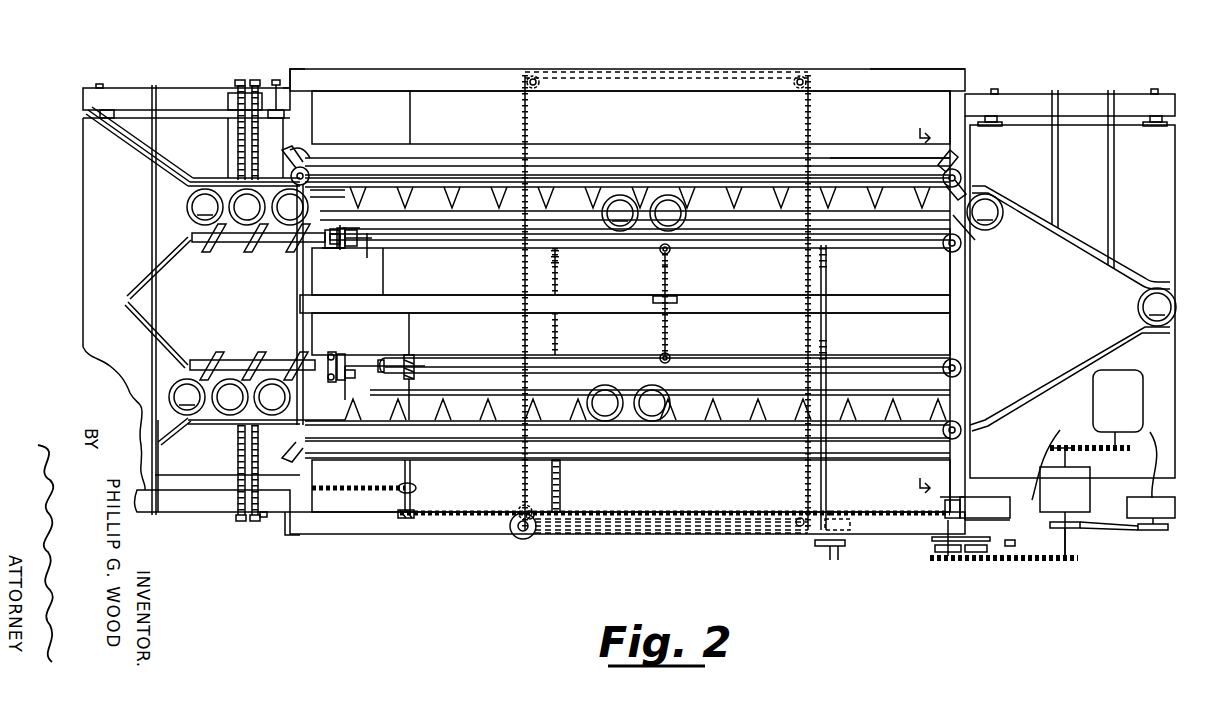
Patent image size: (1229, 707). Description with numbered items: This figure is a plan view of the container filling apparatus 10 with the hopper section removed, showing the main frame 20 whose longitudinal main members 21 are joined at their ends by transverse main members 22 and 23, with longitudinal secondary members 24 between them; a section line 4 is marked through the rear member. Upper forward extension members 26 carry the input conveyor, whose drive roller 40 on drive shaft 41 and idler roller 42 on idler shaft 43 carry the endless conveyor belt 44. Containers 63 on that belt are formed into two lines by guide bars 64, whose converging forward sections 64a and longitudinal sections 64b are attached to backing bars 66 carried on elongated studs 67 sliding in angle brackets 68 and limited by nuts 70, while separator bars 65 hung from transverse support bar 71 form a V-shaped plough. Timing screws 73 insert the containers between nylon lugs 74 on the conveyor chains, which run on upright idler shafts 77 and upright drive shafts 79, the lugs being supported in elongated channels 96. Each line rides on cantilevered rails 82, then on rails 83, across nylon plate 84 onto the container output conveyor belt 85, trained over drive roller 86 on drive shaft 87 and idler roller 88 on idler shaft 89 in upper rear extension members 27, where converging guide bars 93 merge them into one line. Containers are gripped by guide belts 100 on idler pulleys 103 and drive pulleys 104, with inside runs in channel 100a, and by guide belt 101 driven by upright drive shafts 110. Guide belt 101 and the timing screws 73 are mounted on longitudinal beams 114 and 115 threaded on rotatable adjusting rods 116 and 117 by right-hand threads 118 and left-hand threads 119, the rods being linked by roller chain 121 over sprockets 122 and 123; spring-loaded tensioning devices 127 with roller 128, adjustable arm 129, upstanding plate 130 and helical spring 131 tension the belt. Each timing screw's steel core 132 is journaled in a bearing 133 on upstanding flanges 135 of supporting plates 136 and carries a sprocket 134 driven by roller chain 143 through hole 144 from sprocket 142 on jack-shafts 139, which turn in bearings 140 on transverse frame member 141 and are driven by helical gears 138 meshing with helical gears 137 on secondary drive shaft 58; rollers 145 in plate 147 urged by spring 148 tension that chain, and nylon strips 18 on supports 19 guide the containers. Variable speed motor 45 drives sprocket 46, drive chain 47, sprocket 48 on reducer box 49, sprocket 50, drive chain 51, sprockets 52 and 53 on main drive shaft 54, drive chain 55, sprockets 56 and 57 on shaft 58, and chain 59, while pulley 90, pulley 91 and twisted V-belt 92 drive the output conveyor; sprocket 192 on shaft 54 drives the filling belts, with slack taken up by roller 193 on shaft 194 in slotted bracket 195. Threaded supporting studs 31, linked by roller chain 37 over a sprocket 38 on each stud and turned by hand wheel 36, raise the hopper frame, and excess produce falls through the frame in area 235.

The section line 4 is at (933, 308).
The container filling apparatus 10 is at (898, 69).
The nylon strips 18 is at (342, 230).
The supports 19 is at (365, 250).
The main frame 20 is at (290, 69).
The longitudinal main members 21 is at (487, 69).
The transverse main member 22 is at (296, 312).
The transverse main member 23 is at (958, 333).
The longitudinal secondary members 24 is at (432, 172).
The upper forward extension members 26 is at (140, 88).
The upper rear extension members 27 is at (1080, 94).
The threaded supporting studs 31 is at (536, 79).
The hand wheel 36 is at (524, 540).
The roller chain 37 is at (803, 492).
The sprocket 38 is at (540, 76).
The drive roller 40 is at (275, 110).
The drive shaft 41 is at (263, 518).
The idler roller 42 is at (108, 110).
The idler shaft 43 is at (97, 84).
The endless conveyor belt 44 is at (102, 216).
The variable speed motor 45 is at (1107, 409).
The sprocket 46 is at (1135, 449).
The drive chain 47 is at (1092, 450).
The sprocket 48 is at (1072, 446).
The reducer box 49 is at (1054, 501).
The sprocket 50 is at (1073, 562).
The drive chain 51 is at (1040, 562).
The sprocket 52 is at (950, 556).
The sprocket 53 is at (946, 510).
The main drive shaft 54 is at (948, 500).
The drive chain 55 is at (840, 510).
The sprocket 56 is at (409, 519).
The sprocket 57 is at (414, 487).
The secondary drive shaft 58 is at (404, 472).
The chain 59 is at (345, 487).
The containers 63 is at (672, 305).
The guide bars 64 is at (120, 135).
The converging forward sections 64a is at (130, 143).
The longitudinal sections 64b is at (205, 180).
The separator bars 65 is at (150, 282).
The backing bars 66 is at (228, 176).
The elongated studs 67 is at (256, 80).
The angle brackets 68 is at (228, 92).
The nuts 70 is at (238, 82).
The transverse support bar 71 is at (108, 243).
The timing screws 73 is at (212, 250).
The nylon lugs 74 is at (603, 188).
The upright idler shafts 77 is at (292, 175).
The upright drive shafts 79 is at (962, 177).
The cantilevered rails 82 is at (328, 190).
The rails 83 is at (482, 212).
The nylon plate 84 is at (958, 220).
The container output conveyor belt 85 is at (1032, 309).
The drive roller 86 is at (1168, 118).
The drive shaft 87 is at (1155, 89).
The idler roller 88 is at (1000, 118).
The idler shaft 89 is at (994, 89).
The pulley 90 is at (1072, 529).
The pulley 91 is at (1168, 531).
The twisted V-belt 92 is at (1130, 531).
The converging guide bars 93 is at (1076, 245).
The elongated channels 96 is at (680, 160).
The guide belts 100 is at (540, 158).
The channel 100a is at (860, 182).
The guide belt 101 is at (462, 241).
The idler pulleys 103 is at (312, 150).
The drive pulleys 104 is at (960, 172).
The upright drive shafts 110 is at (962, 368).
The longitudinal beam 114 is at (488, 241).
The longitudinal beam 115 is at (572, 366).
The rotatable adjusting rod 116 is at (559, 279).
The rotatable adjusting rod 117 is at (828, 282).
The right-hand threads 118 is at (559, 258).
The left-hand threads 119 is at (558, 346).
The roller chain 121 is at (638, 535).
The sprocket 122 is at (565, 535).
The sprocket 123 is at (845, 533).
The spring-loaded tensioning devices 127 is at (672, 286).
The roller 128 is at (659, 250).
The adjustable arm 129 is at (660, 272).
The upstanding plate 130 is at (680, 300).
The helical spring 131 is at (671, 256).
The steel core 132 is at (325, 237).
The bearing 133 is at (330, 243).
The sprocket 134 is at (334, 249).
The upstanding flanges 135 is at (360, 268).
The supporting plates 136 is at (339, 248).
The helical gears 137 is at (411, 356).
The helical gears 138 is at (410, 354).
The jack-shafts 139 is at (376, 364).
The bearings 140 is at (382, 326).
The transverse frame member 141 is at (384, 278).
The sprocket 142 is at (328, 356).
The roller chain 143 is at (342, 356).
The hole 144 is at (338, 228).
The rollers 145 is at (330, 354).
The plate 147 is at (347, 380).
The spring 148 is at (348, 376).
The sprocket 192 is at (928, 563).
The roller 193 is at (977, 556).
The shaft 194 is at (996, 543).
The slotted bracket 195 is at (651, 525).
The area 235 is at (358, 290).